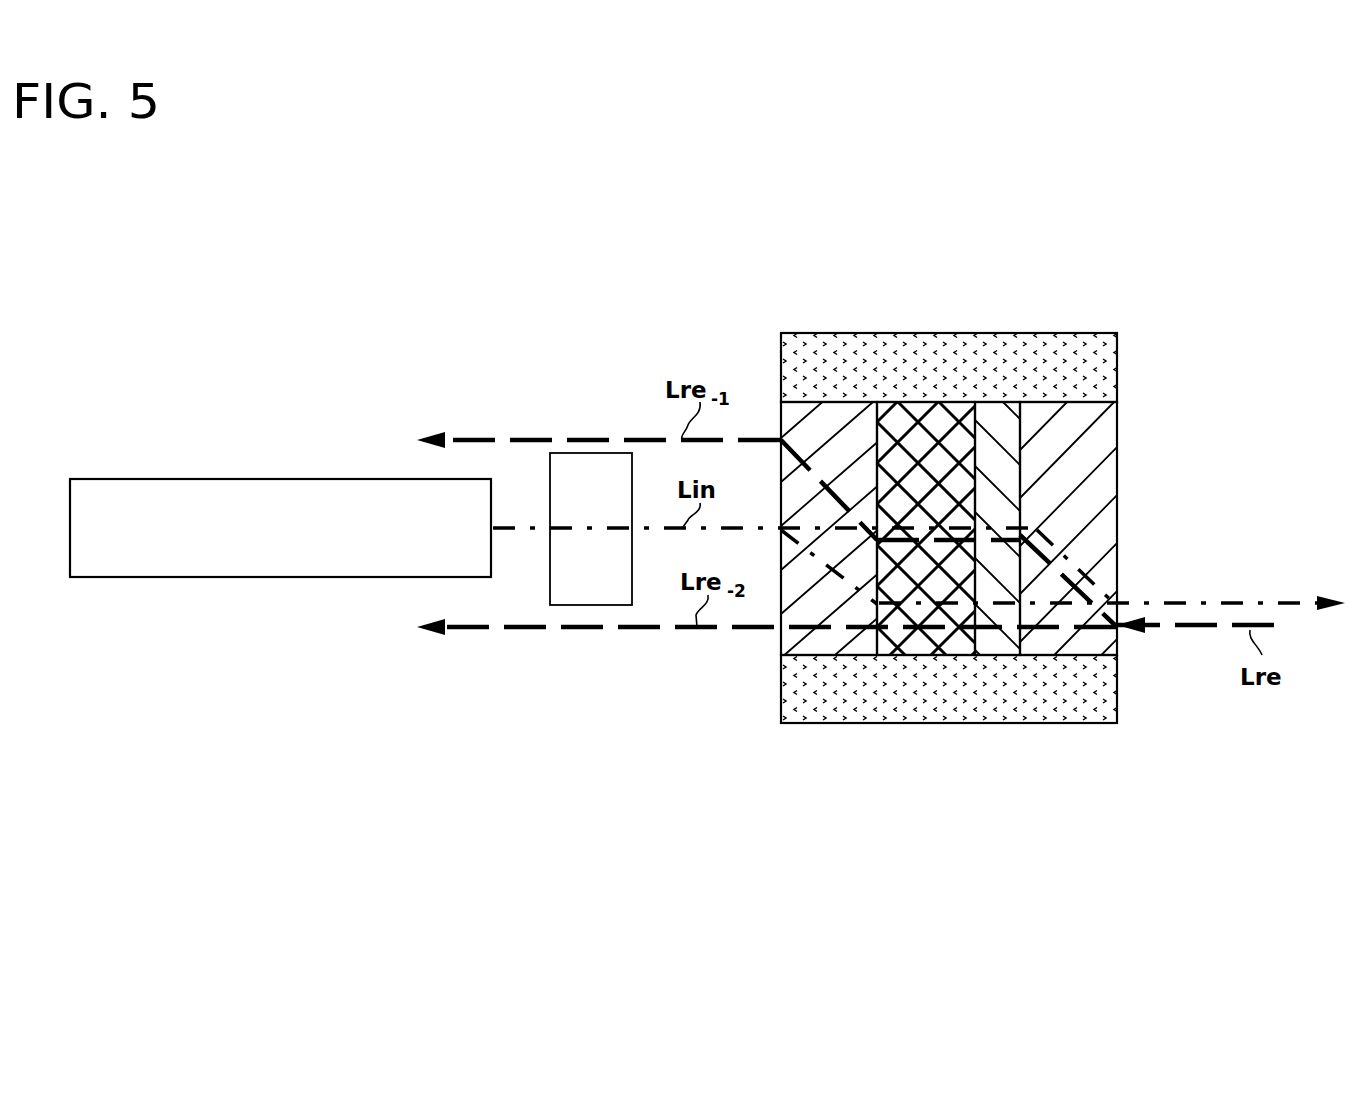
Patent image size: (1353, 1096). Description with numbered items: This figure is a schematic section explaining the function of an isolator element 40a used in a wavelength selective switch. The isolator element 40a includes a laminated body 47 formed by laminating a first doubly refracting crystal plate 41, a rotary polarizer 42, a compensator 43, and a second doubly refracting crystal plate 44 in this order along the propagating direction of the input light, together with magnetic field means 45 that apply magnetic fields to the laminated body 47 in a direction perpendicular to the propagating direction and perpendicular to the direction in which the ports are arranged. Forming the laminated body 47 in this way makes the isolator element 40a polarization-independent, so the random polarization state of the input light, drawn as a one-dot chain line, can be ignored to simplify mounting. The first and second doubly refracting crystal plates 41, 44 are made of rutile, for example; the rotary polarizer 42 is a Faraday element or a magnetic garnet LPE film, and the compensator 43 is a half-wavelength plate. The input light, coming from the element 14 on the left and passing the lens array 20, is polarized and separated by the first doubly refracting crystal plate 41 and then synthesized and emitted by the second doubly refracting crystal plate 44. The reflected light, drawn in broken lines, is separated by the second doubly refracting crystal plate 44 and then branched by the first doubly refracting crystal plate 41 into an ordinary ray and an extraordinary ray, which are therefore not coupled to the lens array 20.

The light source 14 is at (265, 479).
The lens array 20 is at (596, 453).
The isolator element 40a is at (993, 560).
The first doubly refracting crystal plate 41 is at (838, 655).
The rotary polarizer 42 is at (915, 655).
The compensator 43 is at (996, 655).
The second doubly refracting crystal plate 44 is at (1068, 599).
The magnetic field means 45 is at (1117, 355).
The laminated body 47 is at (949, 632).